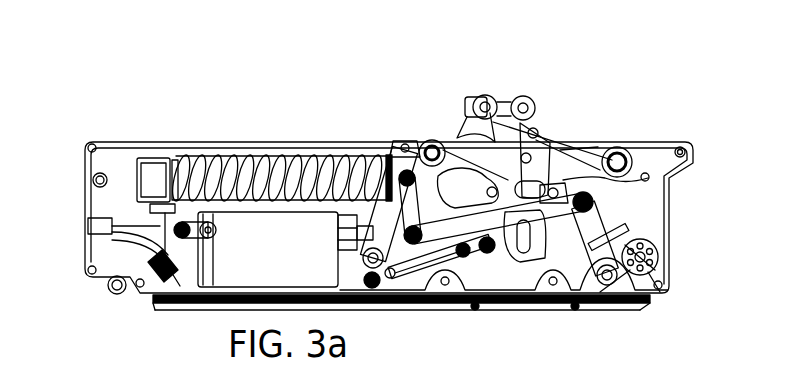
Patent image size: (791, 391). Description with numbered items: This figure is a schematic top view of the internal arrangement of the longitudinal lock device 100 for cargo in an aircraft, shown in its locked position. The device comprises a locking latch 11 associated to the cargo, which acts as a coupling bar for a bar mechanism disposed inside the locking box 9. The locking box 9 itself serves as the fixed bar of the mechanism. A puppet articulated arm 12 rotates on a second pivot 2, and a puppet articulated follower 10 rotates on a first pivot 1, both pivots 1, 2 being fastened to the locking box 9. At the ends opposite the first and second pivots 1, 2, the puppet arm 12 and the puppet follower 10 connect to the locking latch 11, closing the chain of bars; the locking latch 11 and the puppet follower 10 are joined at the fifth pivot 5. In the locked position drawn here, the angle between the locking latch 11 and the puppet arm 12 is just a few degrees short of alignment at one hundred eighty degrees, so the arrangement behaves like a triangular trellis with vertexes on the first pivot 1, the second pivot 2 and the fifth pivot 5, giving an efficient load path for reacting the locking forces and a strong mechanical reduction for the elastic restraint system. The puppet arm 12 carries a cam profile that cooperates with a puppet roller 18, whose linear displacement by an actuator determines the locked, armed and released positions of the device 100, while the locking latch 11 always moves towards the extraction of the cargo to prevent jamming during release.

The longitudinal lock device 100 is at (94, 101).
The first pivot 1 is at (423, 141).
The puppet articulated follower 10 is at (462, 124).
The locking latch 11 is at (469, 88).
The fifth pivot 5 is at (505, 91).
The puppet articulated arm 12 is at (563, 127).
The second pivot 2 is at (630, 140).
The locking box 9 is at (700, 161).
The puppet roller 18 is at (637, 223).